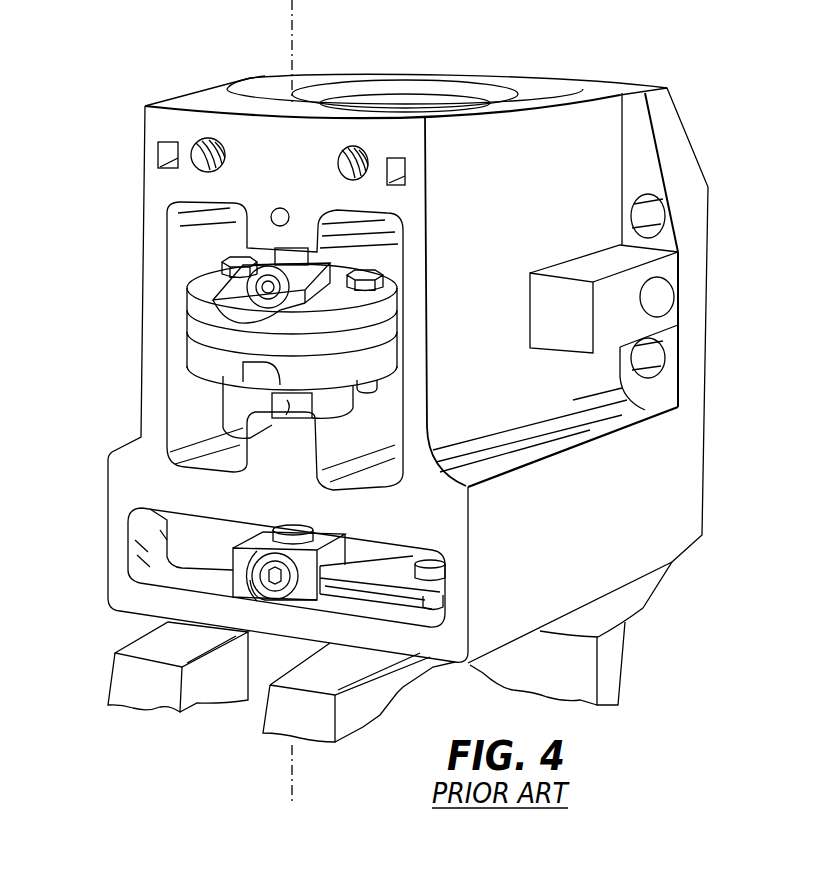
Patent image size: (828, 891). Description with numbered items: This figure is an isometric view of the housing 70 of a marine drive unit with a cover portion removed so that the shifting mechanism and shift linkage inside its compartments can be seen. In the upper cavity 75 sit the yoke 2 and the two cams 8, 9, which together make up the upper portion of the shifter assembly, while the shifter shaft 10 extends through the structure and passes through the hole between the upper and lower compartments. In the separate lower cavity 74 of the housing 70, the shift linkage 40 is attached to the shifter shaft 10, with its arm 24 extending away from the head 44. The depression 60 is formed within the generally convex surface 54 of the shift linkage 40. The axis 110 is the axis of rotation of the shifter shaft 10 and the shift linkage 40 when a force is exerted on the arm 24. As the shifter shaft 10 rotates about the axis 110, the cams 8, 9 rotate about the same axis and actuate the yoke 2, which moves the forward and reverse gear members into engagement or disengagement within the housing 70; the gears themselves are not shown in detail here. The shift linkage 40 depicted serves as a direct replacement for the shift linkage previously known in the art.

The axis 110 is at (294, 47).
The housing 70 is at (583, 128).
The upper cavity 75 is at (175, 247).
The cam 8 is at (197, 309).
The yoke 2 is at (210, 337).
The cam 9 is at (210, 362).
The shifter shaft 10 is at (288, 420).
The lower cavity 74 is at (140, 566).
The shift linkage 40 is at (262, 540).
The depression 60 is at (258, 582).
The convex surface 54 is at (302, 598).
The arm 24 is at (382, 588).
The head 44 is at (360, 555).